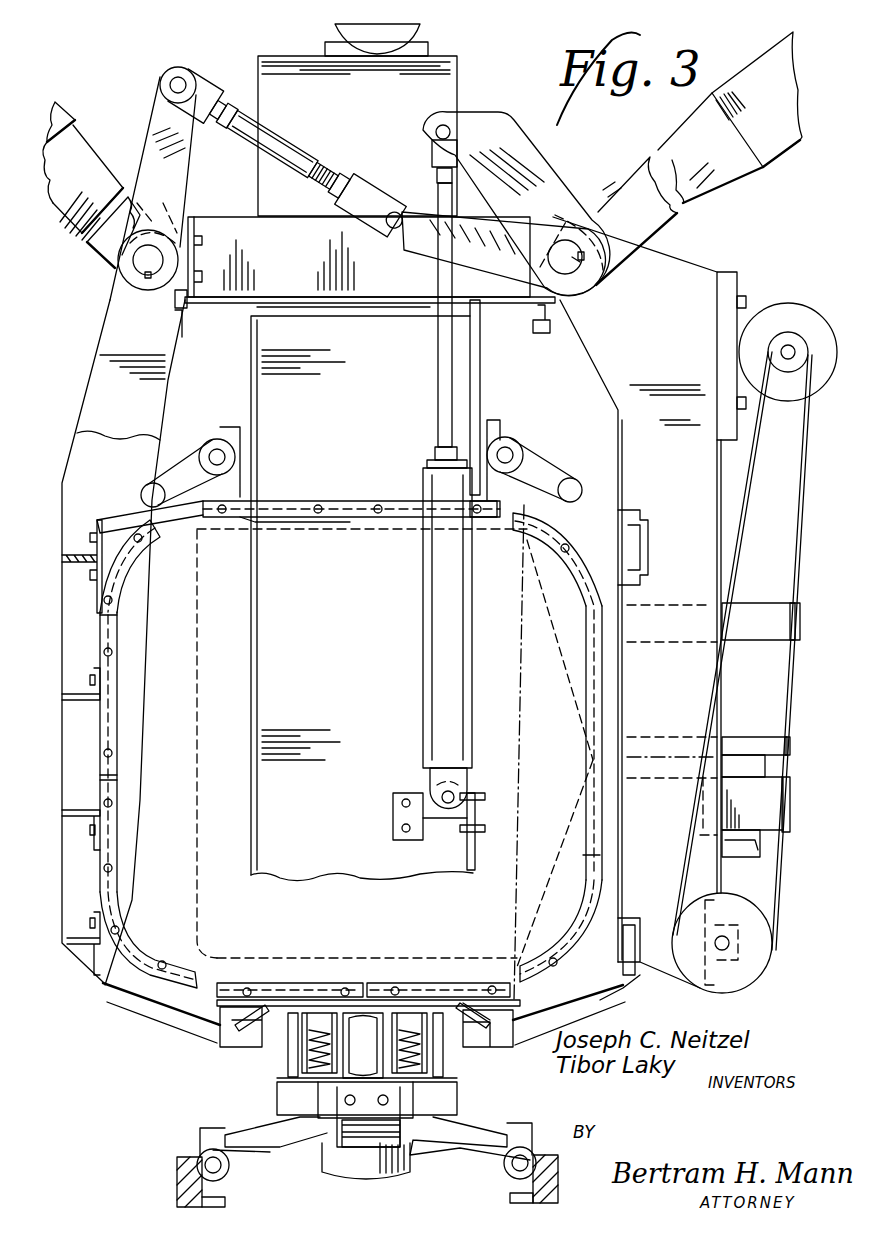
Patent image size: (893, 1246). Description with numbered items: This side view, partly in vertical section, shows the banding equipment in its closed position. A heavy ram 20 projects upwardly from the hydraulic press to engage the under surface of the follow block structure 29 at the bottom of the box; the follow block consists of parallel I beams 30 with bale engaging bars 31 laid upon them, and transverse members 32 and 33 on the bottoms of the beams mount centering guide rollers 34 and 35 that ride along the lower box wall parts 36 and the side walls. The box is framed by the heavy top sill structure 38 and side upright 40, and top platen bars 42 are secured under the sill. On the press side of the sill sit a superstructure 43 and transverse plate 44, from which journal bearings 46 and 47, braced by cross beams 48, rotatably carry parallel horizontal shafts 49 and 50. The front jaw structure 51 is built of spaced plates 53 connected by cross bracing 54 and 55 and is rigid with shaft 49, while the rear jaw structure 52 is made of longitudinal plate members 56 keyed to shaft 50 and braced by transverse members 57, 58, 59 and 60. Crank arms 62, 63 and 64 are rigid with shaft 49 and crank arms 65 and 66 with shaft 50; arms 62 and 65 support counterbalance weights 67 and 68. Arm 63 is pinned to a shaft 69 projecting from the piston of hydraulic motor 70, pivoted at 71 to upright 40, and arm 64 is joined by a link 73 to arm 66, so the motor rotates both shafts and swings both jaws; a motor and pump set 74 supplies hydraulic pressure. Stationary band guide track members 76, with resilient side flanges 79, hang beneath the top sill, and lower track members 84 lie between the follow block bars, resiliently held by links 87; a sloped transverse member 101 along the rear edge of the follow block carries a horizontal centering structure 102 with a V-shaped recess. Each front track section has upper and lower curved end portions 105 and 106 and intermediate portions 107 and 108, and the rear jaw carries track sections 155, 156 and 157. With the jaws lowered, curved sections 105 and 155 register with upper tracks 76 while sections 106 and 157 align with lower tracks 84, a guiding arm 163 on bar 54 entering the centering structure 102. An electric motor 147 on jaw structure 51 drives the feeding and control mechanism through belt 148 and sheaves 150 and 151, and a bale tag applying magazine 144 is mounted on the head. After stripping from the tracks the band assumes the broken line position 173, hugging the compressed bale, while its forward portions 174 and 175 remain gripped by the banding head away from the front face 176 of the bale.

The ram 20 is at (322, 1165).
The follow block structure 29 is at (278, 1074).
The I beams 30 is at (290, 1055).
The bale engaging bars 31 is at (510, 960).
The transverse member 32 is at (400, 1100).
The transverse member 33 is at (262, 1130).
The centering guide roller 34 is at (385, 1175).
The centering guide roller 35 is at (177, 1165).
The lower front and back box wall parts 36 is at (180, 1188).
The top sill structure 38 is at (480, 370).
The side upright 40 is at (251, 652).
The top platen bars 42 is at (538, 490).
The super structure 43 is at (457, 70).
The transverse plate 44 is at (262, 297).
The journal bearing 46 is at (565, 220).
The journal bearing 47 is at (168, 210).
The cross beams 48 is at (233, 217).
The front jaw pivoting shaft 49 is at (580, 262).
The rear jaw pivoting shaft 50 is at (140, 258).
The front band guide carrying jaw structure 51 is at (705, 268).
The rear jaw structure 52 is at (172, 388).
The plates 53 is at (618, 838).
The cross bracing 54 is at (652, 915).
The cross bracing 55 is at (650, 540).
The longitudinal plate members 56 is at (108, 318).
The transverse member 57 is at (75, 555).
The transverse member 58 is at (72, 694).
The transverse member 59 is at (75, 810).
The transverse member 60 is at (78, 938).
The crank arm 62 is at (710, 177).
The crank arm 63 is at (515, 135).
The crank arm 64 is at (486, 248).
The crank arm 65 is at (92, 162).
The crank arm 66 is at (160, 110).
The counterbalance weight 67 is at (790, 147).
The counterbalance weight 68 is at (68, 110).
The shaft 69 is at (438, 275).
The hydraulic motor 70 is at (423, 626).
The pivot 71 is at (442, 790).
The link 73 is at (300, 160).
The motor and pump set 74 is at (420, 34).
The band guide track members 76 is at (292, 517).
The side flange 79 is at (368, 522).
The band guide track members 84 is at (403, 983).
The link 87 is at (305, 990).
The sloped transverse member 101 is at (240, 1033).
The horizontal centering structure 102 is at (205, 1030).
The upper curved end portion 105 is at (580, 565).
The lower curved end portion 106 is at (585, 950).
The intermediate portion 107 is at (594, 700).
The intermediate portion 108 is at (586, 855).
The bale tag applying magazine 144 is at (750, 630).
The electric motor 147 is at (740, 352).
The belt 148 is at (752, 462).
The sheave 150 is at (792, 340).
The sheave 151 is at (775, 967).
The upper curved track section 155 is at (130, 580).
The band guide track section 156 is at (117, 687).
The lower curved track section 157 is at (155, 950).
The guiding arm 163 is at (618, 1000).
The broken line position 173 is at (197, 752).
The forward portion of the band 174 is at (542, 600).
The forward portion of the band 175 is at (567, 827).
The front face 176 is at (522, 680).